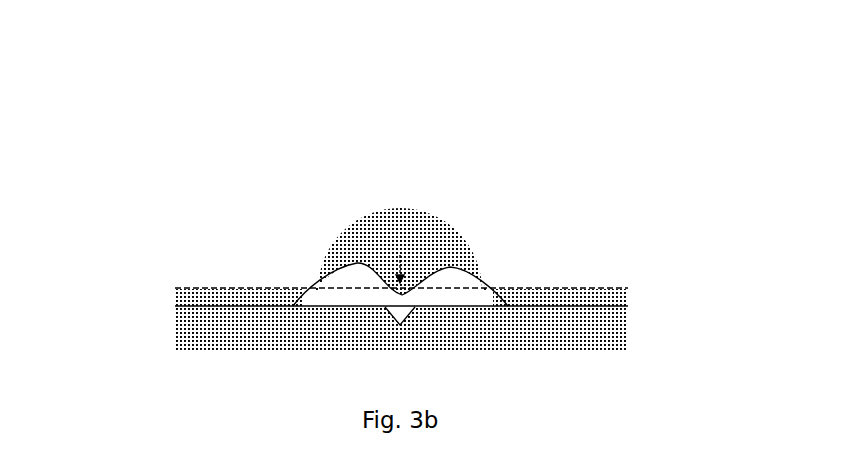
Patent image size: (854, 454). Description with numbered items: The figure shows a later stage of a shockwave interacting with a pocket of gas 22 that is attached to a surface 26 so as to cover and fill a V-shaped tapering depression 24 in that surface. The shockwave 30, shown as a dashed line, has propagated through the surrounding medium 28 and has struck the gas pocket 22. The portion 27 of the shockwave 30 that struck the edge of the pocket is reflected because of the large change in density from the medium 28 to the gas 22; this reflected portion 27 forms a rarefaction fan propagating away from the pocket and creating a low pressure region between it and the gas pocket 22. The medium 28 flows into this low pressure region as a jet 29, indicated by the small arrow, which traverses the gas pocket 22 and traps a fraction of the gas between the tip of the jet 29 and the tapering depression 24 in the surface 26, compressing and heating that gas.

The pocket of gas 22 is at (460, 285).
The V-shaped tapering depression 24 is at (390, 317).
The surface 26 is at (205, 308).
The reflected portion of the shockwave 27 is at (360, 237).
The medium 28 is at (543, 190).
The jet 29 is at (410, 290).
The shockwave 30 is at (220, 288).